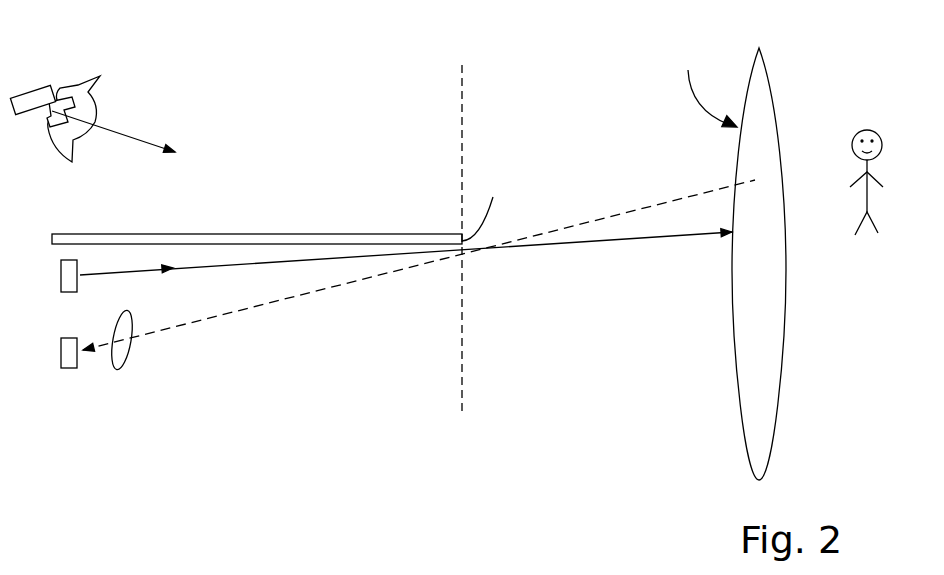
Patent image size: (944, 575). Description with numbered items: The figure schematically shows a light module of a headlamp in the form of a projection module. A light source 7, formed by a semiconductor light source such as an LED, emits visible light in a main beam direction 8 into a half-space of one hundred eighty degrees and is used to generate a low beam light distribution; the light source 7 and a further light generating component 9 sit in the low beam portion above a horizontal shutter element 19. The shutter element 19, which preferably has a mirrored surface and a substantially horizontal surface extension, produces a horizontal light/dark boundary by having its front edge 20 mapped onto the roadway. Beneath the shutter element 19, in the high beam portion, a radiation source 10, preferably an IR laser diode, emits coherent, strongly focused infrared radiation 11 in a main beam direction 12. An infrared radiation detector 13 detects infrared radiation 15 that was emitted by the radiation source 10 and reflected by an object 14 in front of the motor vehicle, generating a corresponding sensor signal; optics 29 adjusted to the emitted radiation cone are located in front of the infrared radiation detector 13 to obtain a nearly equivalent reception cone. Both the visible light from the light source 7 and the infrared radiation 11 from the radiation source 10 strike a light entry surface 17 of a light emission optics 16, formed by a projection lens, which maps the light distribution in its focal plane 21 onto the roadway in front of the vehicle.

The light source 7 is at (32, 95).
The main beam direction 8 is at (123, 128).
The light generating component 9 is at (77, 90).
The radiation source 10 is at (61, 285).
The infrared radiation 11 is at (655, 238).
The main beam direction 12 is at (152, 270).
The infrared radiation detector 13 is at (61, 362).
The object 14 is at (872, 198).
The infrared radiation 15 is at (643, 207).
The light emission optics 16 is at (763, 93).
The light entry surface 17 is at (706, 83).
The shutter element 19 is at (245, 243).
The front edge 20 is at (485, 202).
The focal plane 21 is at (462, 118).
The optics 29 is at (128, 357).